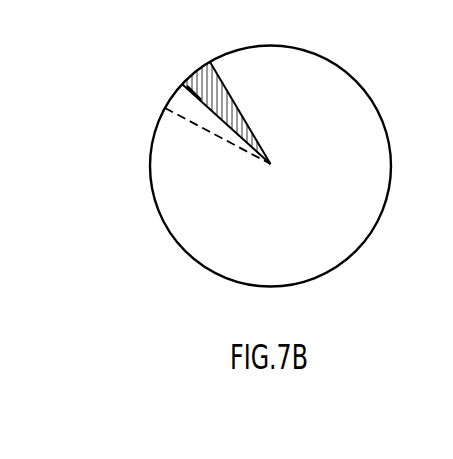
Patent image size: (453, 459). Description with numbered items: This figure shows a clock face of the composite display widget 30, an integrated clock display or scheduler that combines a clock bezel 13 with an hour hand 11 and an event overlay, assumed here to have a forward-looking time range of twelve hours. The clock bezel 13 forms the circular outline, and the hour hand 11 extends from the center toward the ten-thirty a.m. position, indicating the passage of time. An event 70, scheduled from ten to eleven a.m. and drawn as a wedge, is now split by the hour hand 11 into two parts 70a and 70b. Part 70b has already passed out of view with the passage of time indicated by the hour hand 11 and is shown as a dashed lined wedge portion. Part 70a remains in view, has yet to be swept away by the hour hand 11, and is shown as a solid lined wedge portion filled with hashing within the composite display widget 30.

The clock bezel 13 is at (340, 65).
The composite display widget 30 is at (397, 290).
The event 70 is at (198, 70).
The part of event (remaining portion) 70a is at (255, 135).
The part of event (passed portion) 70b is at (215, 137).
The hour hand 11 is at (199, 106).